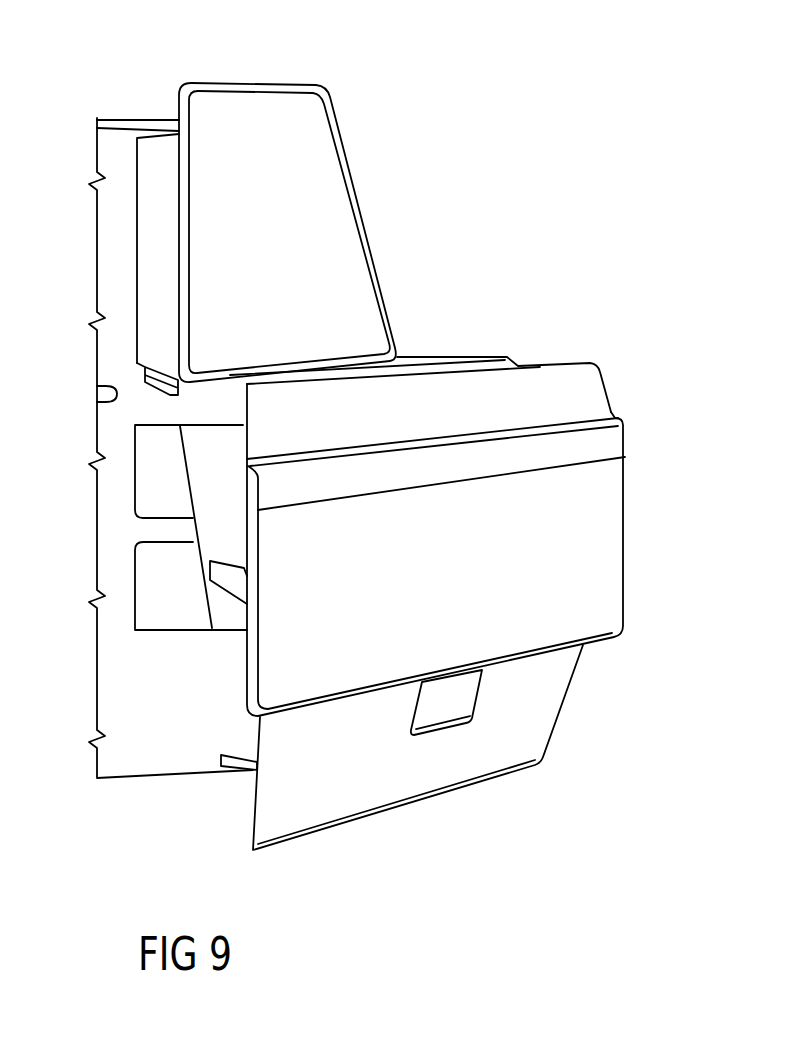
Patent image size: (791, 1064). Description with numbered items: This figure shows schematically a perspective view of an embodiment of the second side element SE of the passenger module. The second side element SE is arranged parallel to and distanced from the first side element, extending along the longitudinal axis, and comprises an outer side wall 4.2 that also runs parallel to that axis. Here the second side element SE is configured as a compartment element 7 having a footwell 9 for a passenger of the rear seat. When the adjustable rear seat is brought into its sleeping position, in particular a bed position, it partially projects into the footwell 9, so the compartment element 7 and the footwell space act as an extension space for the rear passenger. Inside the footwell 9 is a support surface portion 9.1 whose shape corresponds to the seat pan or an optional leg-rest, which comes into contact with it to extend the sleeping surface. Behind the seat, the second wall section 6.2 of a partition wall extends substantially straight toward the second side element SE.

The second wall section 6.2 is at (232, 110).
The outer side wall 4.2 is at (380, 415).
The compartment element 7 is at (572, 397).
The footwell 9 is at (177, 465).
The support surface portion 9.1 is at (230, 585).
The second side element SE is at (457, 156).